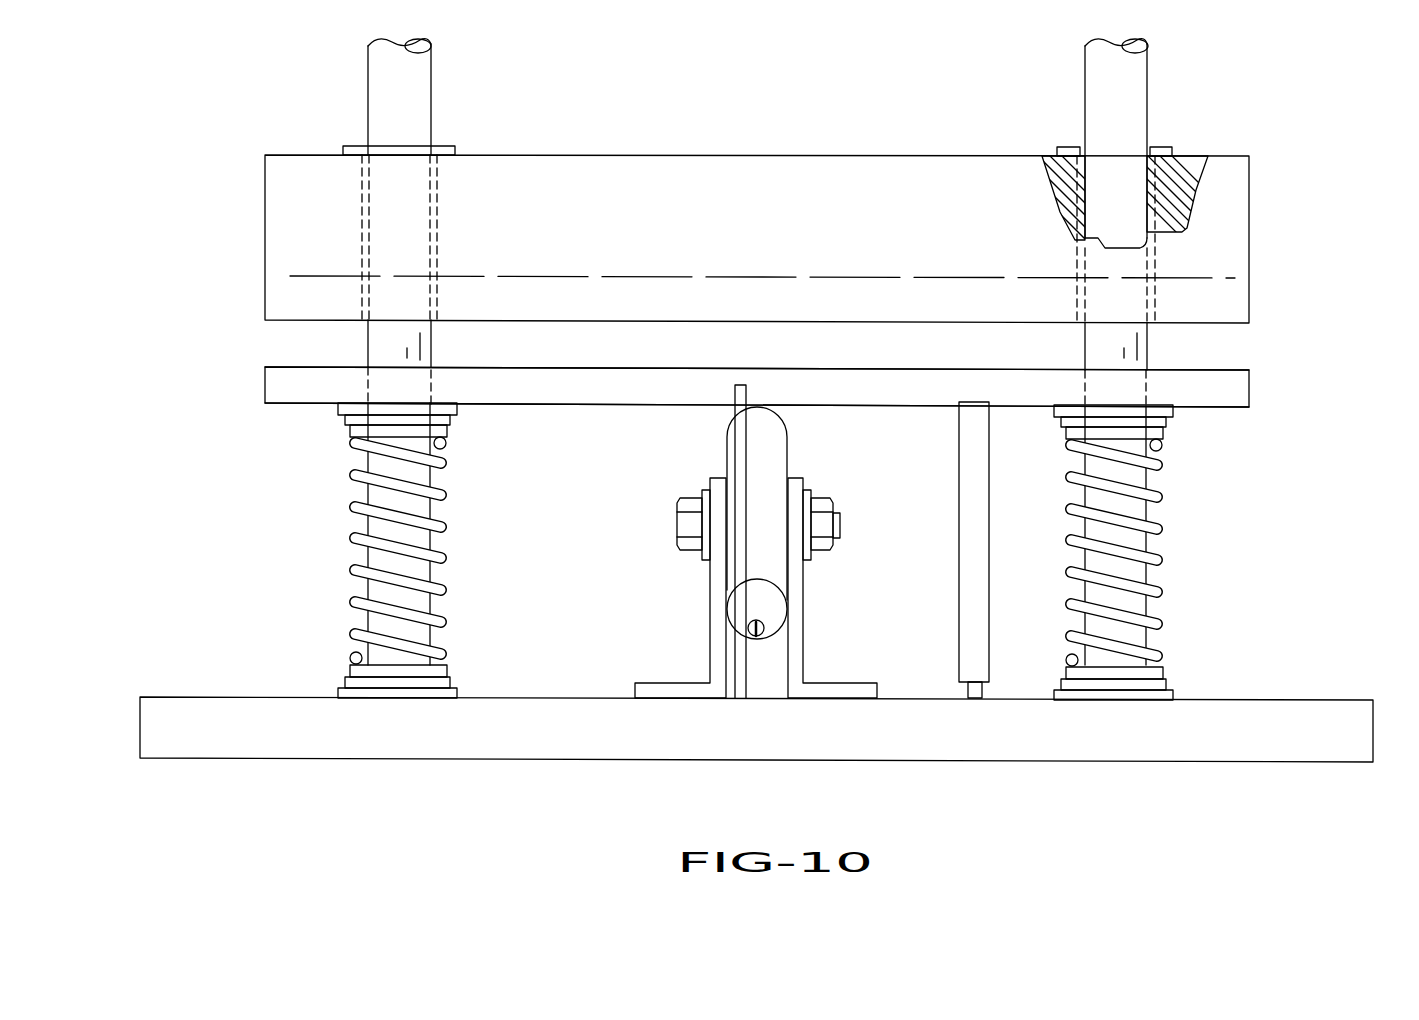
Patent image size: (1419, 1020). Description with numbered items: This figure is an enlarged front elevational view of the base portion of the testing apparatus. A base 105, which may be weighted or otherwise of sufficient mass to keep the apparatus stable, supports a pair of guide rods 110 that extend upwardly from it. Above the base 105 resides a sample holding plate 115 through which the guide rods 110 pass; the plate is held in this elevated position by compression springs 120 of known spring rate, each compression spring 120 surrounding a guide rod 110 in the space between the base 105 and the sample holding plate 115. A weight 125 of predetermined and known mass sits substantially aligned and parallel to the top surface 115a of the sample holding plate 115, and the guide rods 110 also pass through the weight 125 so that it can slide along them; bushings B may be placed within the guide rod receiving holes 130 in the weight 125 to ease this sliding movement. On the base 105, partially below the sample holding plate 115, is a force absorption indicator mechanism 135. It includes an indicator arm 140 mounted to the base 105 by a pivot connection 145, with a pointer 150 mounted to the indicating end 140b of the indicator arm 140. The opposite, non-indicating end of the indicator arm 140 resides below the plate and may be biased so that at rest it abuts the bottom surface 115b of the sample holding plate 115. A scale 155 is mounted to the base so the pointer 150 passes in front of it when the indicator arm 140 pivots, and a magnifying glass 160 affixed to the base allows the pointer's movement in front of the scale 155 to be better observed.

The base 105 is at (1273, 700).
The guide rods 110 is at (385, 92).
The sample holding plate 115 is at (1228, 387).
The top surface of the sample holding plate 115a is at (305, 367).
The bottom surface of the sample holding plate 115b is at (303, 404).
The compression springs 120 is at (363, 542).
The weight 125 is at (1228, 228).
The guide rod receiving holes 130 is at (430, 192).
The bushings B is at (1162, 145).
The force absorption indicator mechanism 135 is at (680, 598).
The indicator arm 140 is at (763, 548).
The indicating end of the indicator arm 140b is at (768, 604).
The pivot connection 145 is at (688, 525).
The pointer 150 is at (757, 640).
The scale 155 is at (745, 488).
The magnifying glass 160 is at (977, 617).